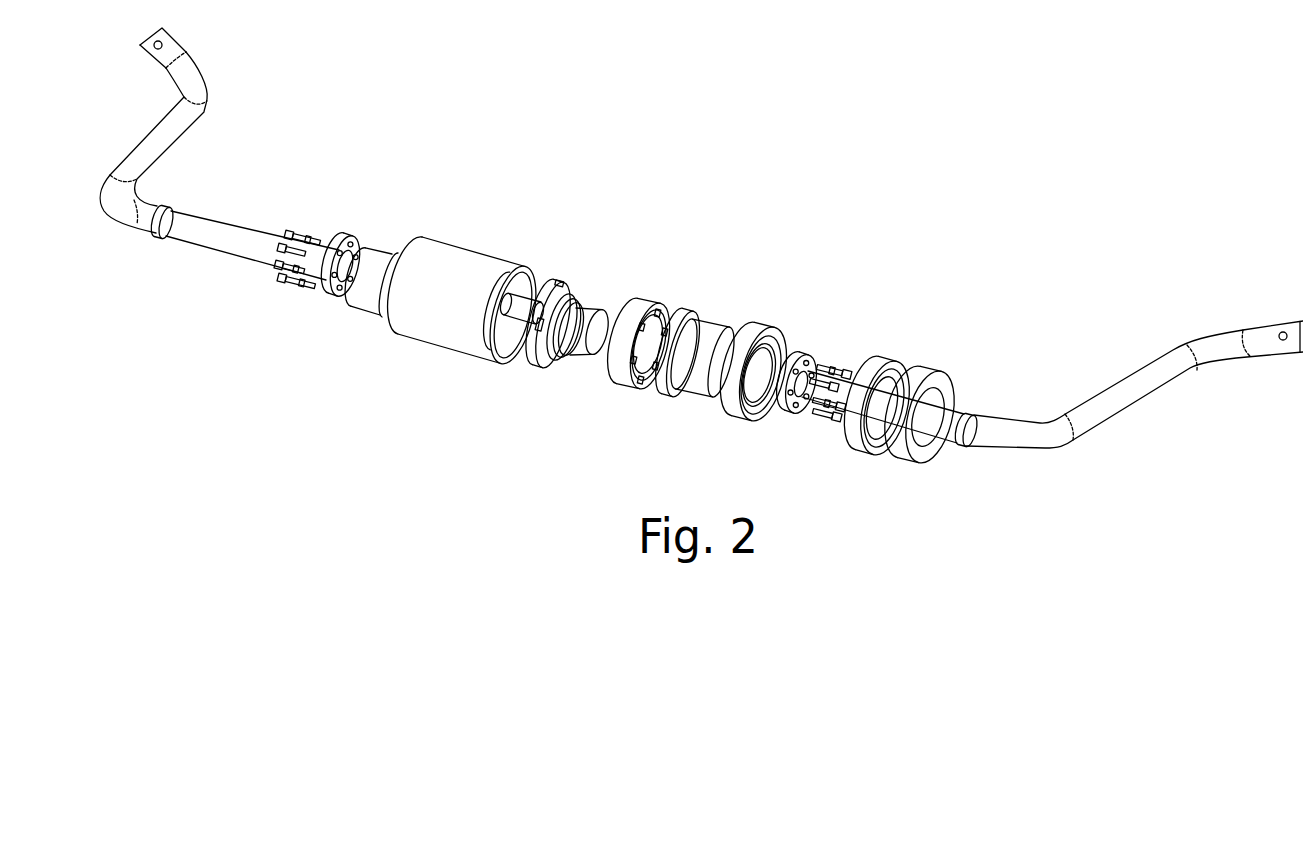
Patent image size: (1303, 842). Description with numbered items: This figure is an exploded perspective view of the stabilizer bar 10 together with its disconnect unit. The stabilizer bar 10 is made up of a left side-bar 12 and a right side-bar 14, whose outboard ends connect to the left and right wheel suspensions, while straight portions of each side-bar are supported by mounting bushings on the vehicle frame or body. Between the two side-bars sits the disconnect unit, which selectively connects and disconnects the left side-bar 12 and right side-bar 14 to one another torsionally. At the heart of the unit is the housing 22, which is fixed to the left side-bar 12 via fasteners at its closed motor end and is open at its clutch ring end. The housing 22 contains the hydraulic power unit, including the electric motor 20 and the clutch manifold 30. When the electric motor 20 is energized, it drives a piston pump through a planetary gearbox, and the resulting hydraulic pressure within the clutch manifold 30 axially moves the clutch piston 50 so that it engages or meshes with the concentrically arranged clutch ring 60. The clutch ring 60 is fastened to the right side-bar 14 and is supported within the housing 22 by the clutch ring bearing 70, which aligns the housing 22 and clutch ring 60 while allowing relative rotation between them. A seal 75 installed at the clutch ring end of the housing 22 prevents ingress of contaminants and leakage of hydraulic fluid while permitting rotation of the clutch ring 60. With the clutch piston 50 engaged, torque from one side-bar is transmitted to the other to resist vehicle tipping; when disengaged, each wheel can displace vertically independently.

The stabilizer bar 10 is at (729, 137).
The left side-bar 12 is at (222, 233).
The right side-bar 14 is at (1127, 392).
The electric motor 20 is at (520, 307).
The housing 22 is at (453, 260).
The clutch manifold 30 is at (565, 276).
The clutch piston 50 is at (643, 310).
The clutch ring 60 is at (688, 324).
The clutch ring bearing 70 is at (753, 337).
The seal 75 is at (878, 359).